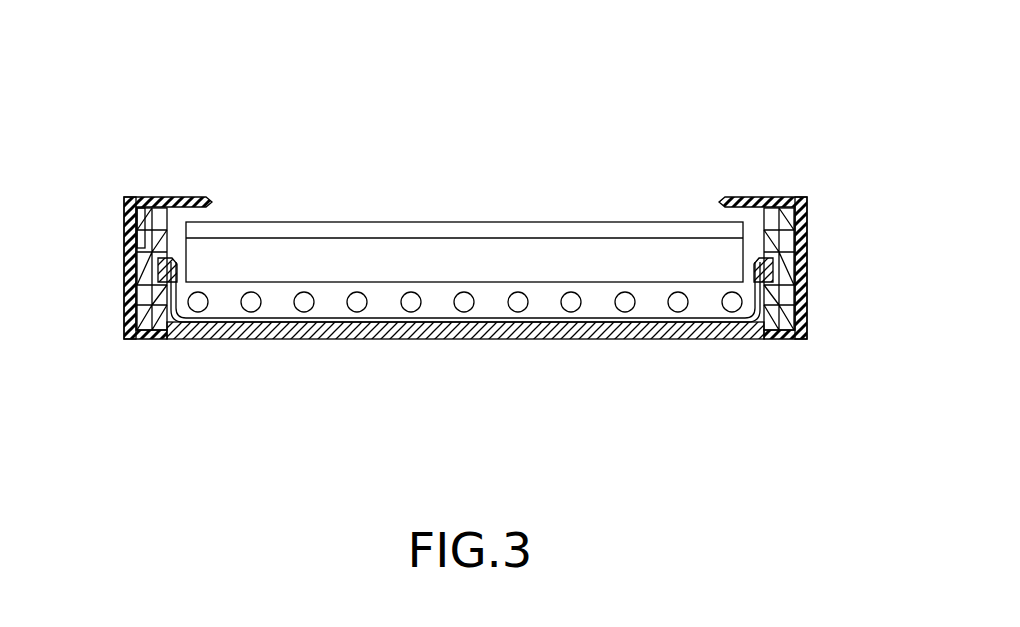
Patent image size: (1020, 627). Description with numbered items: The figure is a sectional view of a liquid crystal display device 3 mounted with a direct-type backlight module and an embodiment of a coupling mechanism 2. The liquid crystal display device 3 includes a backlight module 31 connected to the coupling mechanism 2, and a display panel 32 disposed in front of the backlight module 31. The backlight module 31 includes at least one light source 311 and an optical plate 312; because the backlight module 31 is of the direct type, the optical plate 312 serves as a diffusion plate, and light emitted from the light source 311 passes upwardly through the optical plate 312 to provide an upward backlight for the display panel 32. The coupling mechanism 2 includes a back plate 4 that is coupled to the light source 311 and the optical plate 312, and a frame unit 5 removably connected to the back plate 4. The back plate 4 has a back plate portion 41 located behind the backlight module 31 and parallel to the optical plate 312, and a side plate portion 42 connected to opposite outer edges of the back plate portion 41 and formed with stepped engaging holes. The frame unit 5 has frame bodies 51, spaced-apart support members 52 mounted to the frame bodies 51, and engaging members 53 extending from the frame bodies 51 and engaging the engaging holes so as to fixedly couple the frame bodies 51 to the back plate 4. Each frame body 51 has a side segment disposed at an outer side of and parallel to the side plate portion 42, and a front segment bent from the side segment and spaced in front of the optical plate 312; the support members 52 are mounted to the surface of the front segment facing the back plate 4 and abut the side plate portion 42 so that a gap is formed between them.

The coupling mechanism 2 is at (668, 148).
The liquid crystal display device 3 is at (541, 208).
The backlight module 31 is at (440, 305).
The light source 311 is at (306, 303).
The optical plate 312 is at (495, 240).
The display panel 32 is at (392, 227).
The back plate 4 is at (617, 343).
The back plate portion 41 is at (528, 330).
The side plate portion 42 is at (140, 225).
The frame unit 5 is at (128, 192).
The frame body 51 is at (121, 297).
The support member 52 is at (148, 207).
The engaging member 53 is at (170, 268).